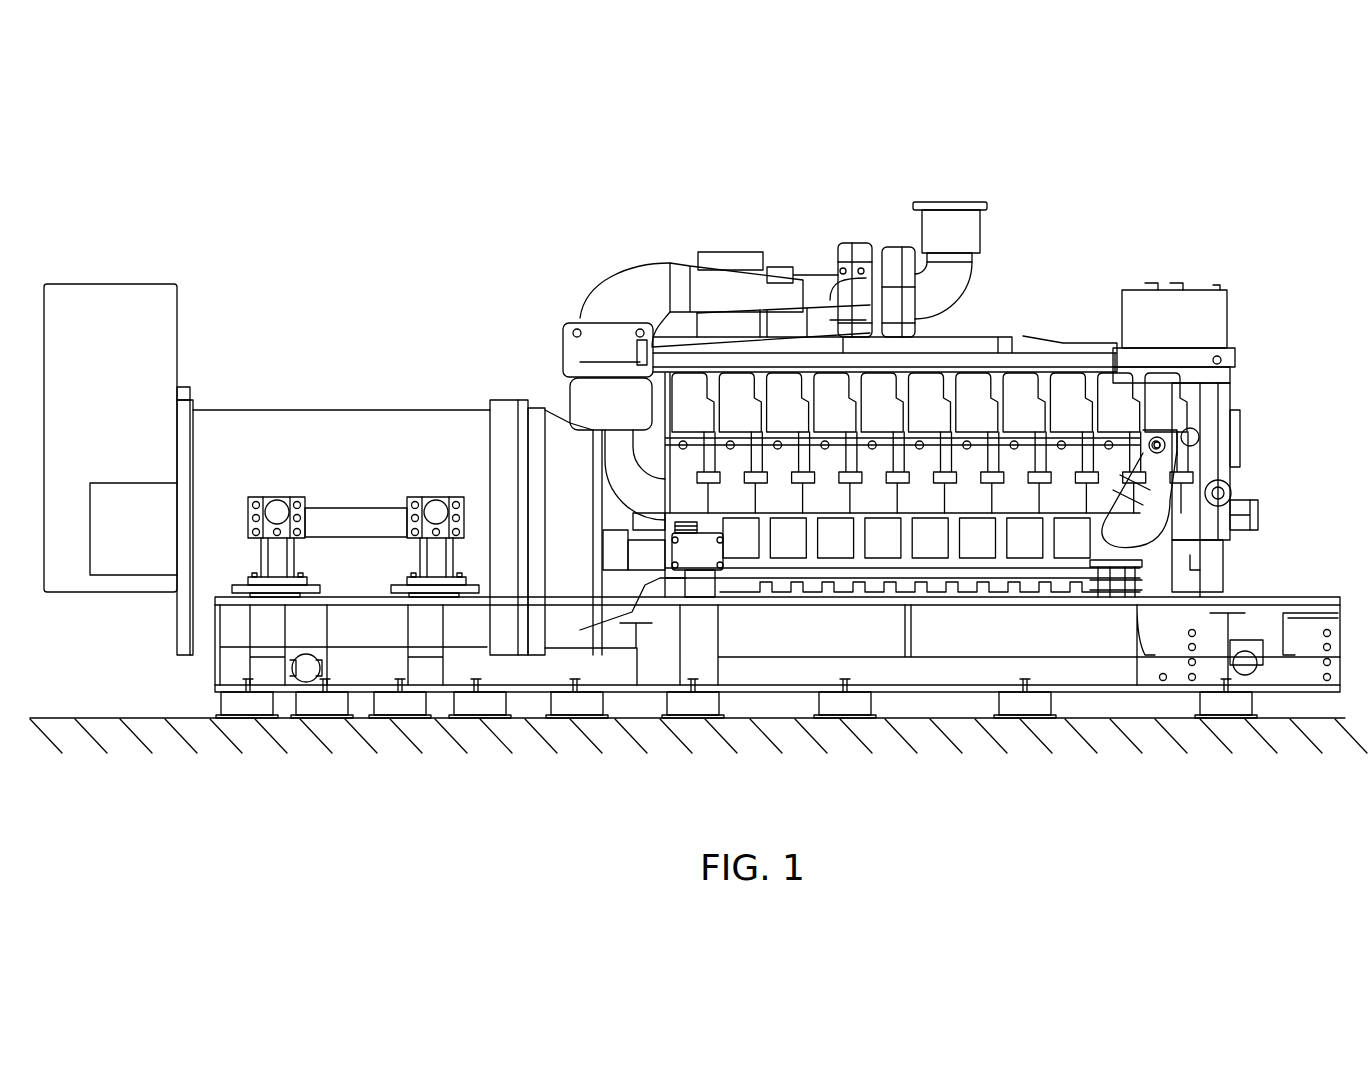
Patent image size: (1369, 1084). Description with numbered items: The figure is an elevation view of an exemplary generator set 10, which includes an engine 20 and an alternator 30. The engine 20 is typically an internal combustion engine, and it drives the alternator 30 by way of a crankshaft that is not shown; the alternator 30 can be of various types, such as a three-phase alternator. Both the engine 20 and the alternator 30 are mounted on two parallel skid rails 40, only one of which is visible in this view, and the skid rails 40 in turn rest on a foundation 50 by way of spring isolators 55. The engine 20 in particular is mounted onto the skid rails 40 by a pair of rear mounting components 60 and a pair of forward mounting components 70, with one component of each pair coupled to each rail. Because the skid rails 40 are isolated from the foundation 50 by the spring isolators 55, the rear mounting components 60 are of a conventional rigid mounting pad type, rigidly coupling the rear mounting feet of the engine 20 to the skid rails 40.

The generator set 10 is at (965, 138).
The engine 20 is at (1062, 225).
The alternator 30 is at (341, 301).
The skid rails 40 is at (1279, 593).
The foundation 50 is at (88, 714).
The spring isolators 55 is at (210, 705).
The rear mounting components 60 is at (729, 606).
The forward mounting components 70 is at (1083, 606).